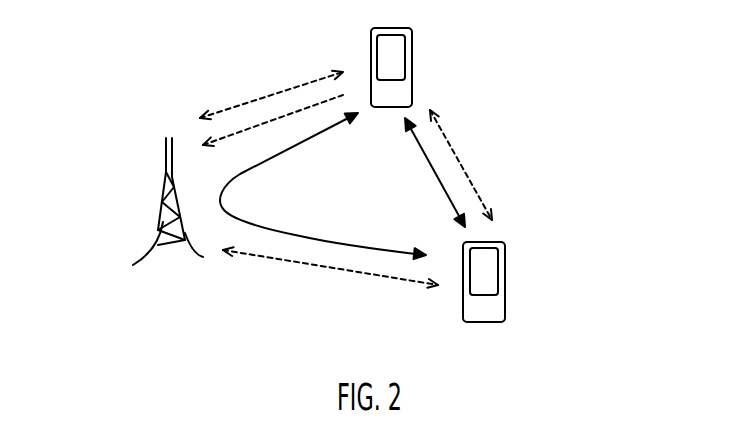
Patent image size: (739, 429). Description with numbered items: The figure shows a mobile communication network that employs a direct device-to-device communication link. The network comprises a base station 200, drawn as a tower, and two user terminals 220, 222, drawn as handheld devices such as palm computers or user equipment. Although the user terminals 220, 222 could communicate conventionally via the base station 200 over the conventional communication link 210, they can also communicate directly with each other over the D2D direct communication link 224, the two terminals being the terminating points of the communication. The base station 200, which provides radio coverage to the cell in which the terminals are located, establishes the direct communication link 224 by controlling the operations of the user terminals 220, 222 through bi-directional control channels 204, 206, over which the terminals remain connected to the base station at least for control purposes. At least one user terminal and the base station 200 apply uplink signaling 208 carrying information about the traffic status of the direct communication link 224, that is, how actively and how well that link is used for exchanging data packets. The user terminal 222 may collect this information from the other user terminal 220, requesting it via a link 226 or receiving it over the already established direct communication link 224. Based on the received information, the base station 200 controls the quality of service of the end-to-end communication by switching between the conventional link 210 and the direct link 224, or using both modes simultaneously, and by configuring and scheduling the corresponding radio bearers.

The base station 200 is at (160, 207).
The bi-directional control channel 204 is at (270, 93).
The bi-directional control channel 206 is at (353, 272).
The uplink signaling 208 is at (245, 130).
The conventional communication link 210 is at (293, 237).
The user terminal 220 is at (505, 300).
The user terminal 222 is at (412, 43).
The D2D direct communication link 224 is at (428, 170).
The link 226 is at (465, 175).